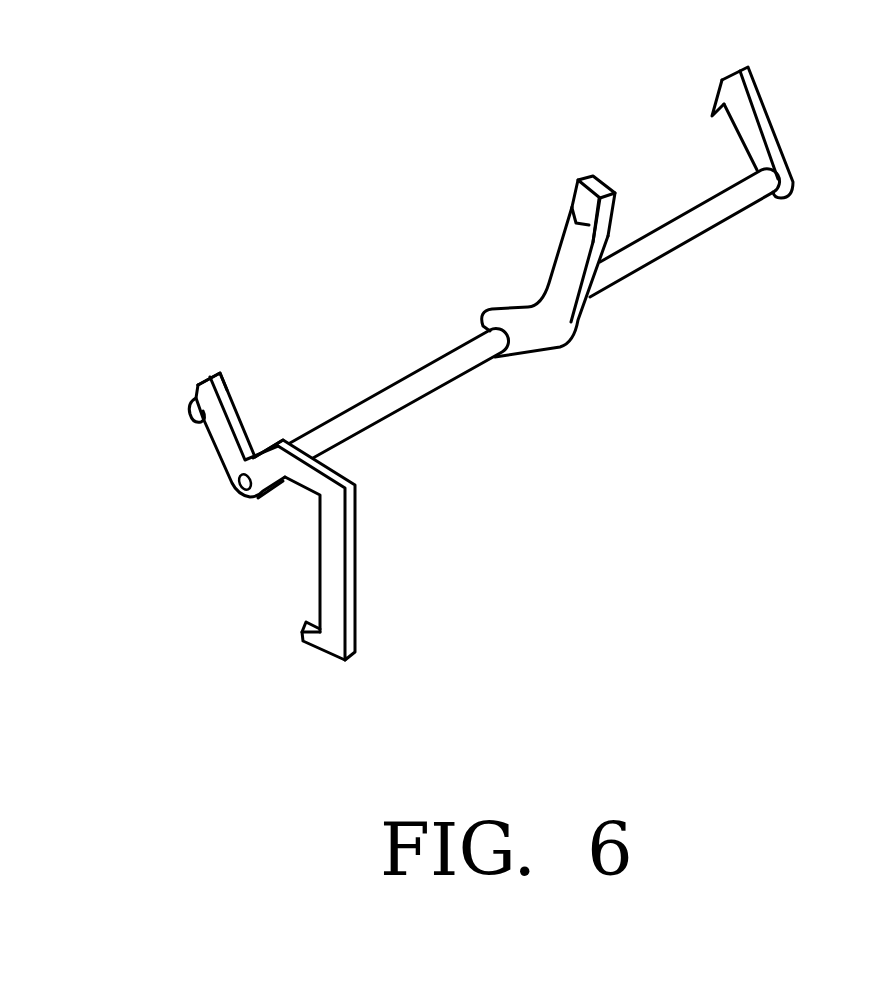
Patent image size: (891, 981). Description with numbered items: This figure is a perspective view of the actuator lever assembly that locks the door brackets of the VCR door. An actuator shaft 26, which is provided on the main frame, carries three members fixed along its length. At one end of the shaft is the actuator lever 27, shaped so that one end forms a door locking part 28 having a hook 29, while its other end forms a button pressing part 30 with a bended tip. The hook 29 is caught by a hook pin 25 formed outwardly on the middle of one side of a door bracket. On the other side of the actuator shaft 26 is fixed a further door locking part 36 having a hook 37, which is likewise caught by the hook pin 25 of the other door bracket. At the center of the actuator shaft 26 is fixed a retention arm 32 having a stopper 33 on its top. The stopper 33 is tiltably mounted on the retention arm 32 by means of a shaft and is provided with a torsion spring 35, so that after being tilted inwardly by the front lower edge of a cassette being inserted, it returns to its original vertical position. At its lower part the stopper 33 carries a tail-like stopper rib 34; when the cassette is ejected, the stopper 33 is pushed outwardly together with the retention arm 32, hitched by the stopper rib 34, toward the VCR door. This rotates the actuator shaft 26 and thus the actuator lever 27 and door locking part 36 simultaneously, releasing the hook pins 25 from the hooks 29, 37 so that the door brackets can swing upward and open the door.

The hook pin 25 is at (197, 422).
The actuator shaft 26 is at (397, 395).
The actuator lever 27 is at (320, 575).
The door locking part 28 is at (227, 447).
The hook 29 is at (198, 390).
The button pressing part 30 is at (334, 627).
The retention arm 32 is at (540, 335).
The stopper 33 is at (578, 179).
The stopper rib 34 is at (605, 229).
The torsion spring 35 is at (592, 224).
The door locking part 36 is at (767, 122).
The hook 37 is at (717, 97).